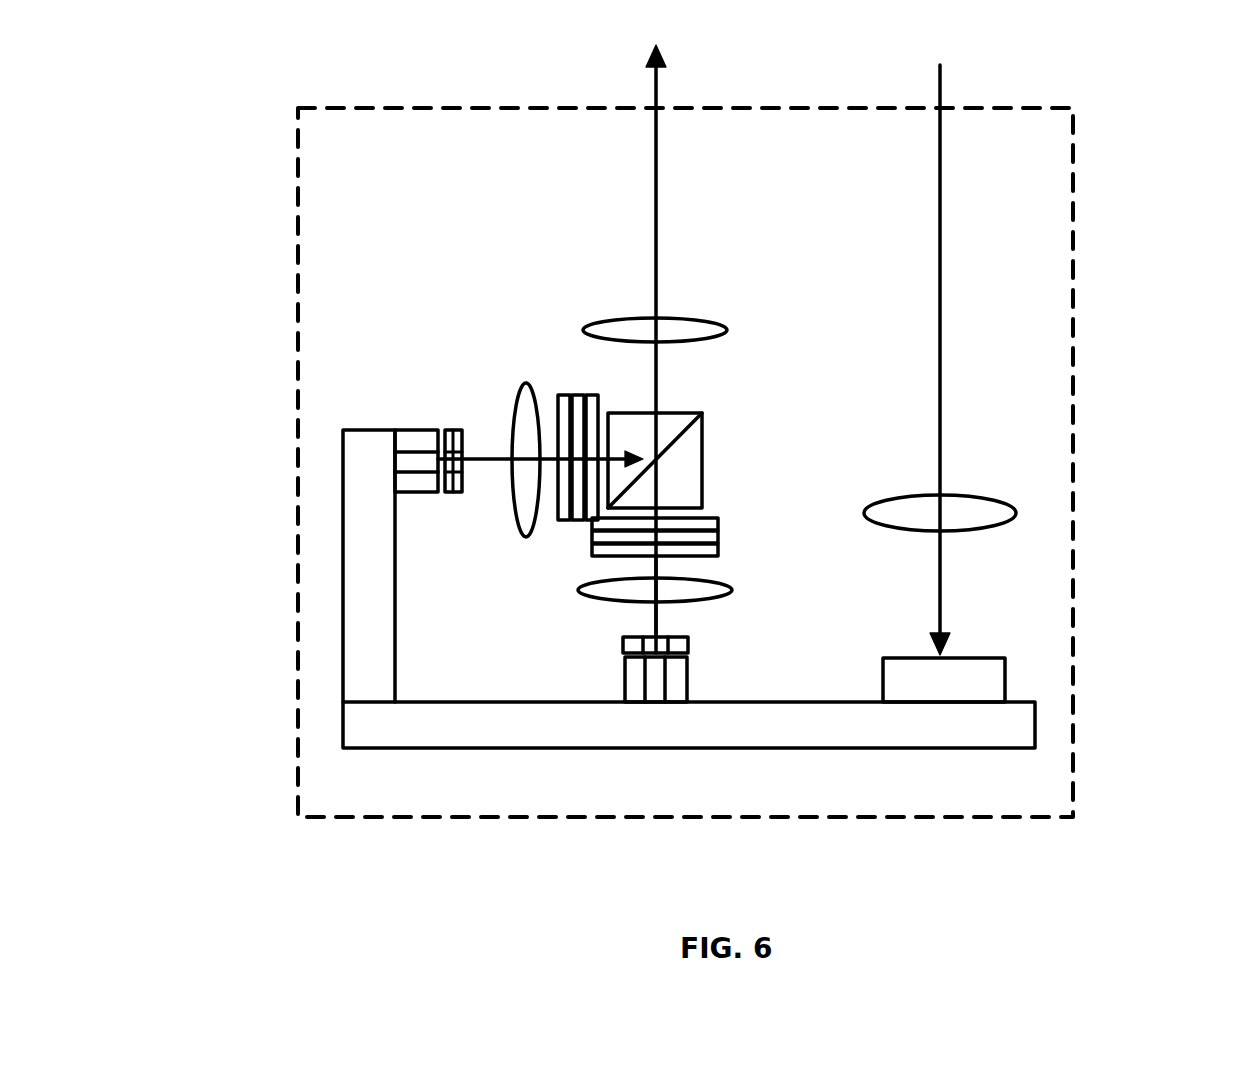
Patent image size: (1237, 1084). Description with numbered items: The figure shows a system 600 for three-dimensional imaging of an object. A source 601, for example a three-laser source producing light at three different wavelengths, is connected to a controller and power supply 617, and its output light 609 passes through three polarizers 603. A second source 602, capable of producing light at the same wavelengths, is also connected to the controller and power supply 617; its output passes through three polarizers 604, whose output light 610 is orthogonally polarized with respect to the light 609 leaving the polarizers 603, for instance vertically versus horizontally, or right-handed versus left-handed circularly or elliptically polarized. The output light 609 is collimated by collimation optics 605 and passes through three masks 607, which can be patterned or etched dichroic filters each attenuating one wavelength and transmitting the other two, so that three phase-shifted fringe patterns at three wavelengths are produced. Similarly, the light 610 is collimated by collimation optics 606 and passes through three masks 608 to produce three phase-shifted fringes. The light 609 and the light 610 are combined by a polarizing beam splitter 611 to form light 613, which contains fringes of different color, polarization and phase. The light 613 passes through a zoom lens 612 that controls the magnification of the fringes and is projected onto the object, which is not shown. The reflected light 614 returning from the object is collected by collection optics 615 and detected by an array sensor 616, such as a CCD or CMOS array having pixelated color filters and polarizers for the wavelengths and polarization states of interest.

The system 600 is at (298, 108).
The source 601 is at (407, 430).
The source 602 is at (625, 683).
The polarizers 603 is at (452, 432).
The polarizers 604 is at (625, 647).
The collimation optics 605 is at (528, 385).
The collimation optics 606 is at (577, 590).
The masks 607 is at (572, 397).
The masks 608 is at (718, 535).
The output light 609 is at (493, 457).
The light 610 is at (656, 617).
The polarizing beam splitter 611 is at (702, 425).
The zoom lens 612 is at (727, 330).
The light 613 is at (656, 145).
The reflected light 614 is at (940, 258).
The collection optics 615 is at (1016, 513).
The array sensor 616 is at (1005, 682).
The controller and power supply 617 is at (363, 748).